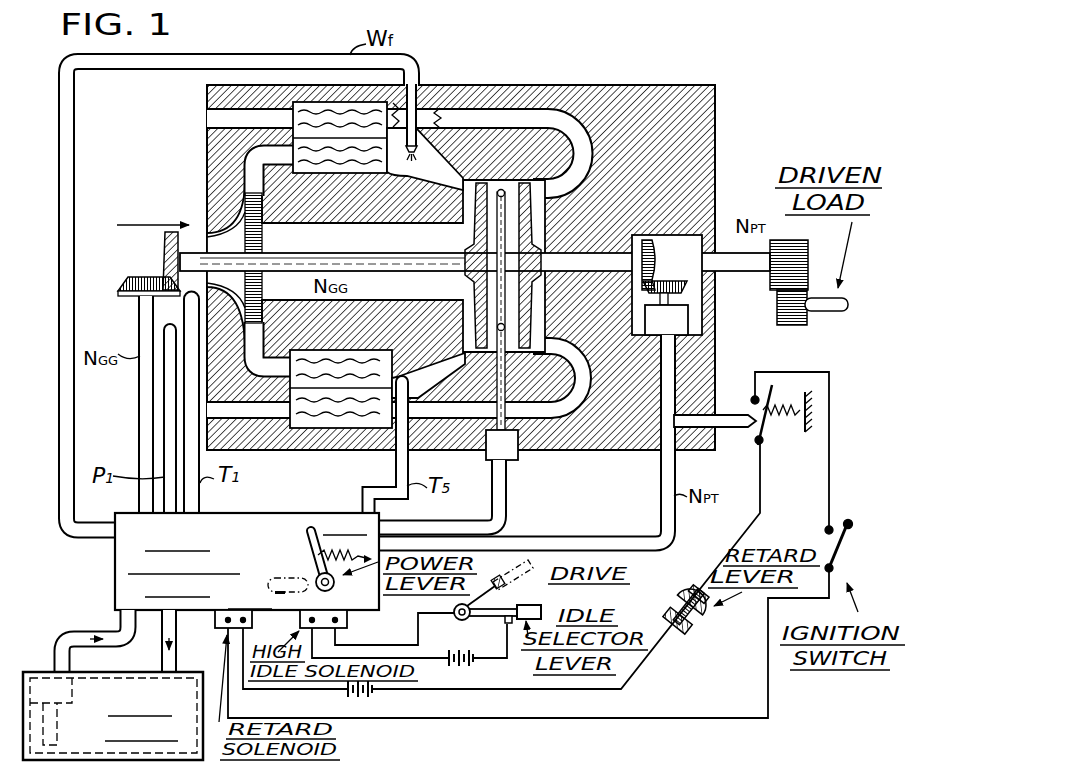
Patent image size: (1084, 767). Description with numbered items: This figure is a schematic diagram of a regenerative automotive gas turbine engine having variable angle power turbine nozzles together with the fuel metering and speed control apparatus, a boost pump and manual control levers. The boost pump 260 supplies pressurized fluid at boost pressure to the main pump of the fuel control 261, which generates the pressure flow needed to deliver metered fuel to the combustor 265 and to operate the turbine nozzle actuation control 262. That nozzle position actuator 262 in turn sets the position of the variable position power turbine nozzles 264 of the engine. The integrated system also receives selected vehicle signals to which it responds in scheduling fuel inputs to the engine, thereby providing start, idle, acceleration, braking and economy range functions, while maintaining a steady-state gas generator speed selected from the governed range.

The boost pump 260 is at (37, 680).
The fuel control 261 is at (268, 545).
The turbine nozzle actuation control 262 is at (515, 456).
The variable position power turbine nozzles 264 is at (502, 234).
The combustor 265 is at (418, 146).